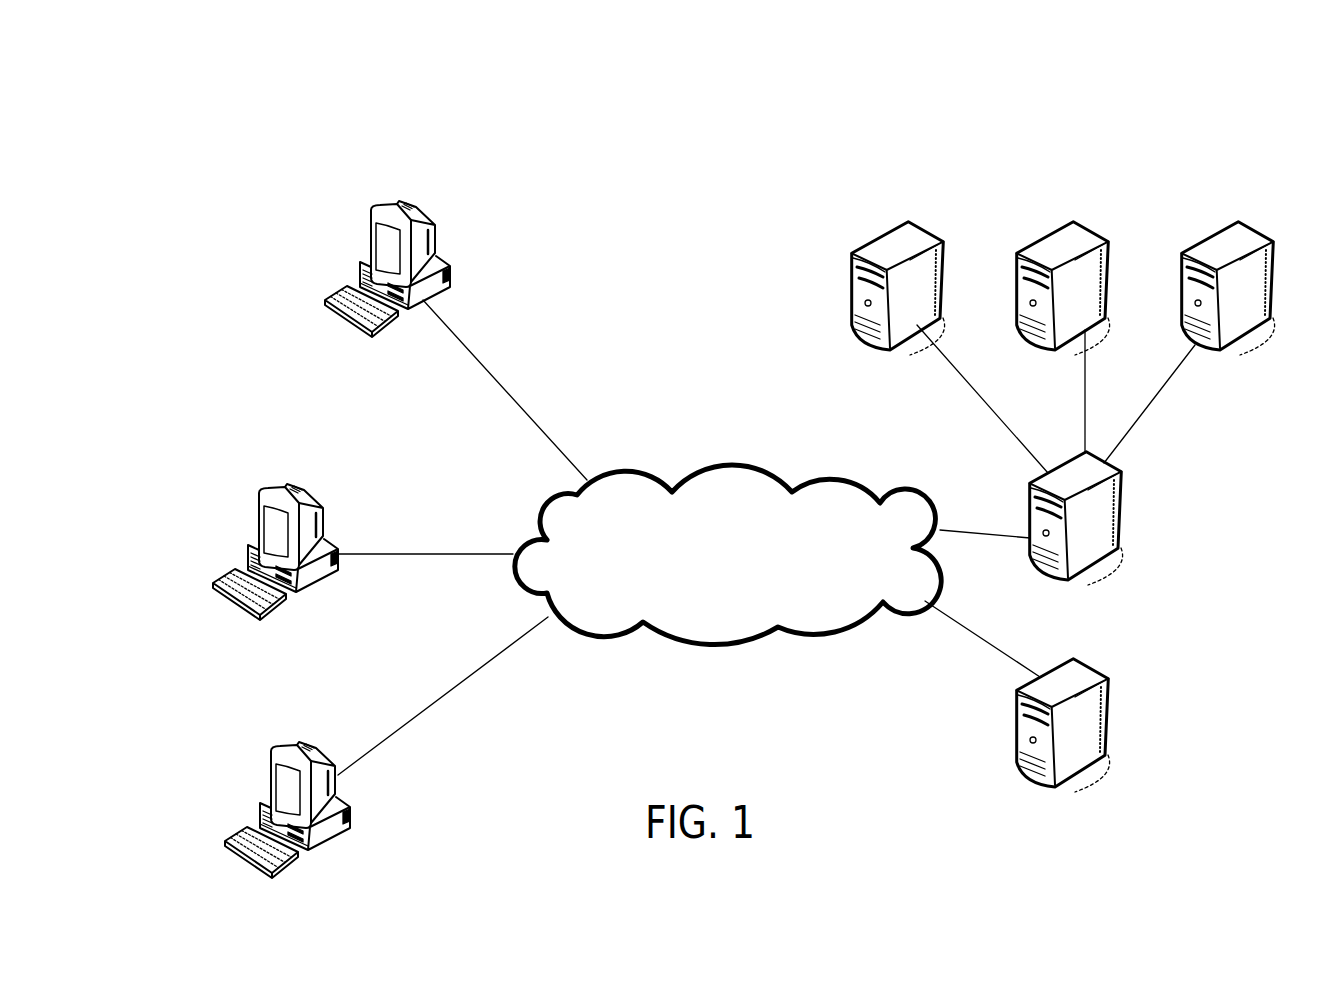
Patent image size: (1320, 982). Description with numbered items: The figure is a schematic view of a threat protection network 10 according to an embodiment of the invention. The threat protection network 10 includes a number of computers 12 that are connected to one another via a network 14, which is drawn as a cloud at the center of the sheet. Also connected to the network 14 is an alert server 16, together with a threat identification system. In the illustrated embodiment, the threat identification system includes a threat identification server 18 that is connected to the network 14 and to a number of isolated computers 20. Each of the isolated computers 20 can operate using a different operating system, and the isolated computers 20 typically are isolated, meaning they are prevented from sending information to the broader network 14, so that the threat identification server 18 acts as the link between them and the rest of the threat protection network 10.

The threat protection network 10 is at (553, 247).
The computers 12 is at (367, 243).
The network 14 is at (803, 634).
The alert server 16 is at (1107, 737).
The threat identification server 18 is at (1097, 562).
The isolated computers 20 is at (877, 237).